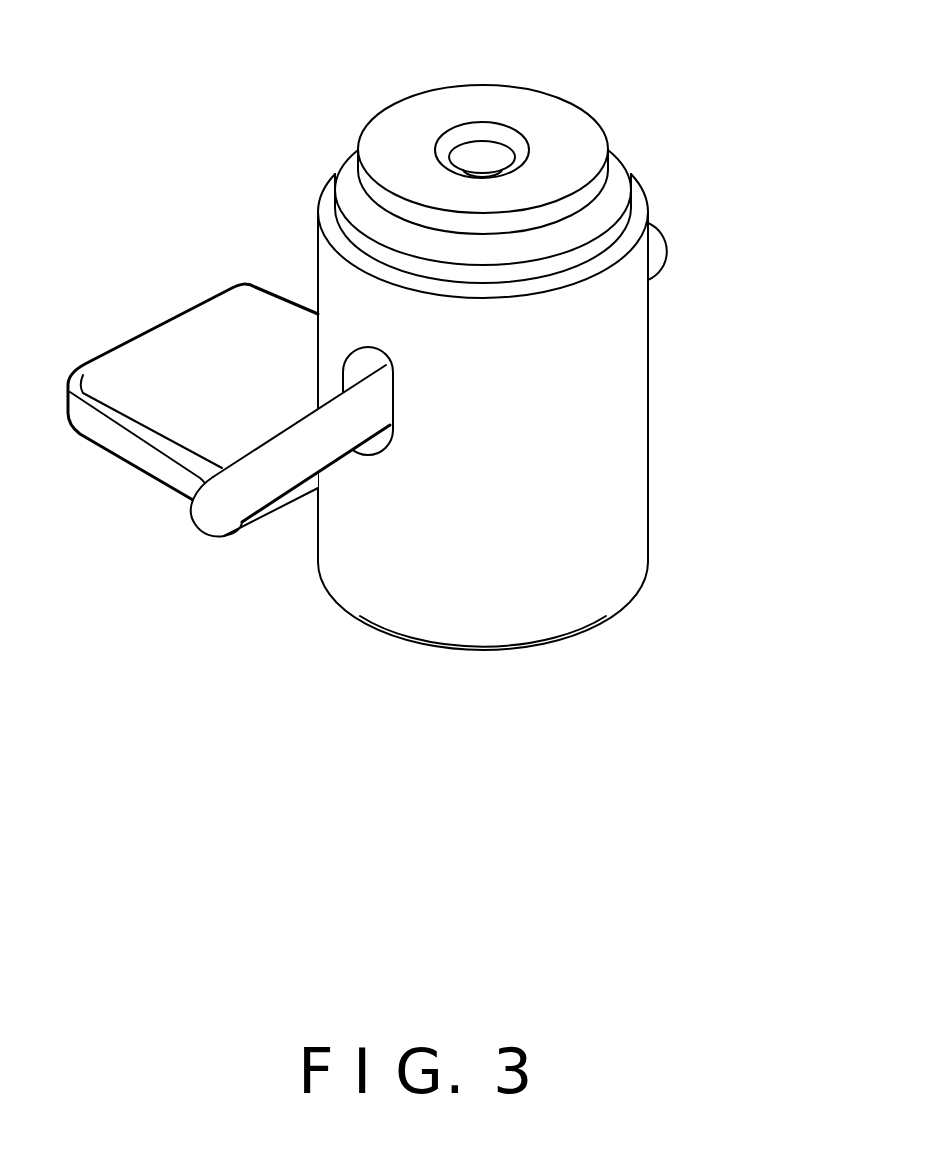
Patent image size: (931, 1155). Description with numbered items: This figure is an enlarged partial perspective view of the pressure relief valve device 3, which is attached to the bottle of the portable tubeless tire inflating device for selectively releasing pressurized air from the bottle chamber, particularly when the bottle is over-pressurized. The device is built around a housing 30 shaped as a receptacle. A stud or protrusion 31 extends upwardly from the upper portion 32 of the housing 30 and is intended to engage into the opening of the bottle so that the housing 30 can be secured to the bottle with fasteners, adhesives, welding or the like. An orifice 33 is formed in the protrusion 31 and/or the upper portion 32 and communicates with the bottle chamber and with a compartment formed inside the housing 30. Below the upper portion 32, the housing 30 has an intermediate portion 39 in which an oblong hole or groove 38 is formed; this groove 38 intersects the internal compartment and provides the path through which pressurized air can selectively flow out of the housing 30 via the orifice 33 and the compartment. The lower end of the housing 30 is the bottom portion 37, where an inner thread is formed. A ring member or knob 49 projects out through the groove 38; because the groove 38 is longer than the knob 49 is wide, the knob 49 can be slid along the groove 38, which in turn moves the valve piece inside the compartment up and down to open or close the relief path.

The pressure relief valve device 3 is at (411, 377).
The housing 30 is at (620, 303).
The protrusion 31 is at (407, 113).
The upper portion 32 is at (615, 187).
The orifice 33 is at (490, 148).
The bottom portion 37 is at (572, 592).
The groove 38 is at (382, 455).
The intermediate portion 39 is at (605, 402).
The knob 49 is at (220, 527).